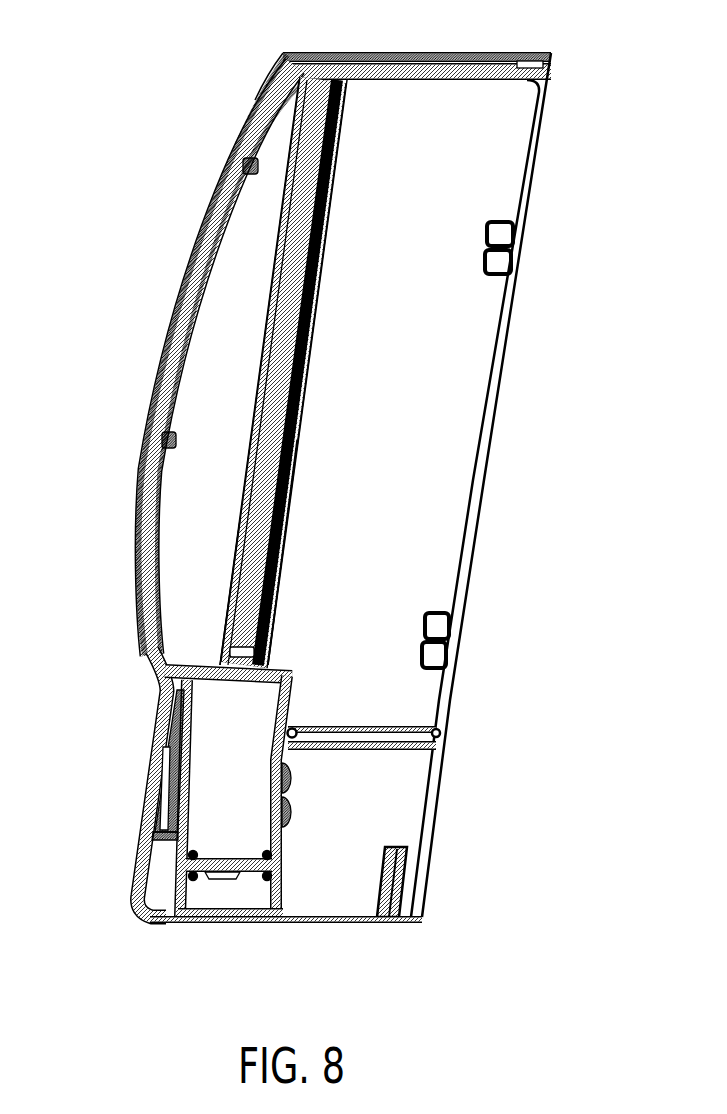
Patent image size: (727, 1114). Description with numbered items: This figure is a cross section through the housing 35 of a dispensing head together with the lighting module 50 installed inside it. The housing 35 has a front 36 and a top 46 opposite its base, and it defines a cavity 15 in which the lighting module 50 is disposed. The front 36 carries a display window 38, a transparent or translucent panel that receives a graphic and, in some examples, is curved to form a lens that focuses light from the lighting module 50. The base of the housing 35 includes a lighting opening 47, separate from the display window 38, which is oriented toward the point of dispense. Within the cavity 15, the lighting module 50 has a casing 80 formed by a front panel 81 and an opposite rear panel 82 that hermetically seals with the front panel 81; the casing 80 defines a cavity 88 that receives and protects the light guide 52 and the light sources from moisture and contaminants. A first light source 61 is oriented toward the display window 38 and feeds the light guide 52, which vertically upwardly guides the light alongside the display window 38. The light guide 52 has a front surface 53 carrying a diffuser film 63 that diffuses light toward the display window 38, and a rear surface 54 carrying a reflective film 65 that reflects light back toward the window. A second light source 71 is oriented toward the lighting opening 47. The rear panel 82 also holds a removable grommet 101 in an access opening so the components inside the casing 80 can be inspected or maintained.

The cavity 15 is at (440, 412).
The housing 35 is at (308, 493).
The front 36 is at (266, 87).
The display window 38 is at (168, 307).
The top 46 is at (380, 52).
The lighting opening 47 is at (243, 923).
The lighting module 50 is at (275, 372).
The light guide 52 is at (302, 406).
The front surface 53 is at (261, 393).
The rear surface 54 is at (313, 331).
The first light source 61 is at (231, 680).
The diffuser film 63 is at (239, 532).
The reflective film 65 is at (322, 284).
The second light source 71 is at (222, 880).
The casing 80 is at (185, 504).
The front panel 81 is at (279, 230).
The rear panel 82 is at (327, 233).
The cavity 88 is at (224, 762).
The grommet 101 is at (293, 775).